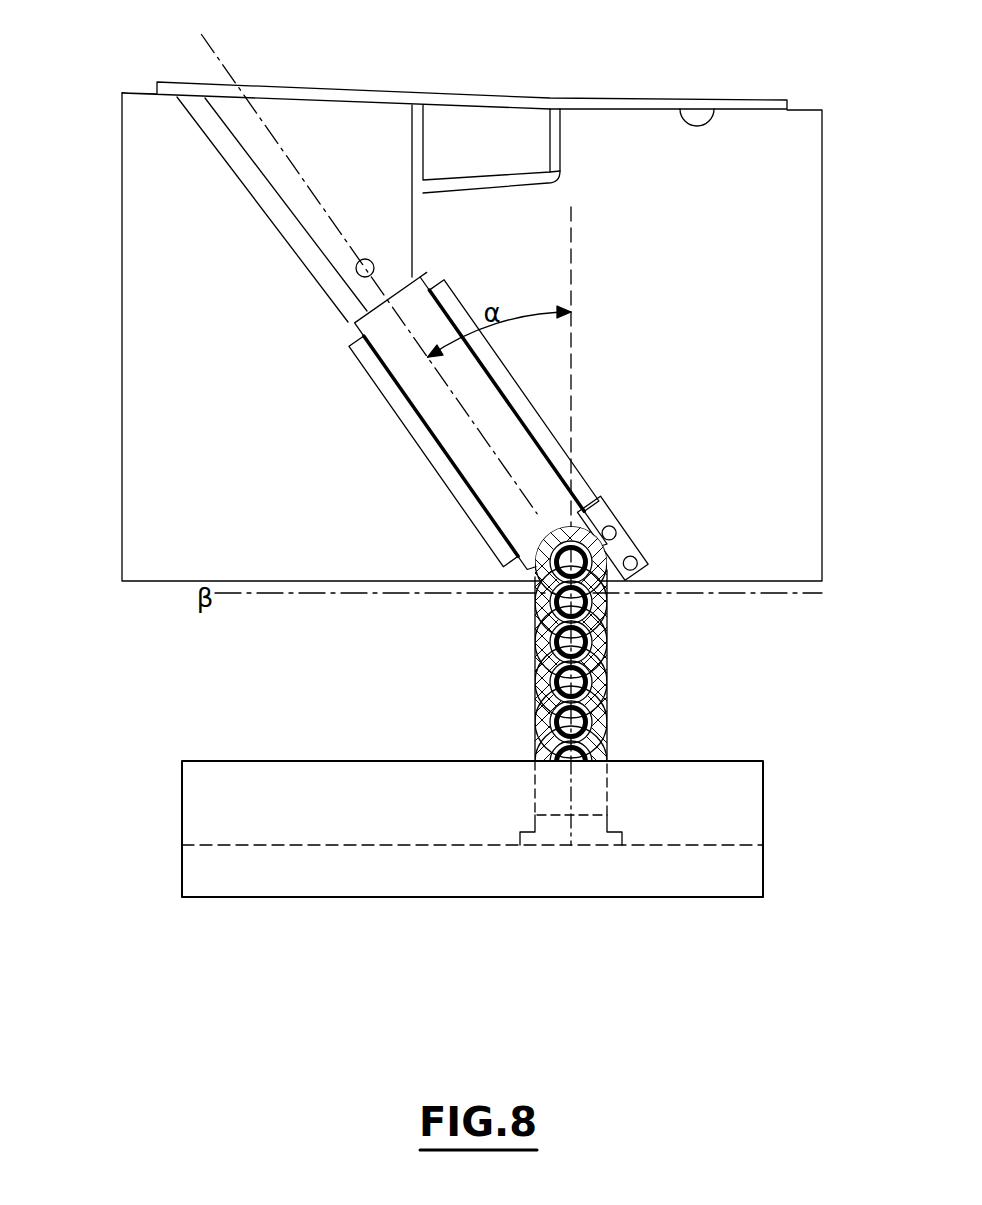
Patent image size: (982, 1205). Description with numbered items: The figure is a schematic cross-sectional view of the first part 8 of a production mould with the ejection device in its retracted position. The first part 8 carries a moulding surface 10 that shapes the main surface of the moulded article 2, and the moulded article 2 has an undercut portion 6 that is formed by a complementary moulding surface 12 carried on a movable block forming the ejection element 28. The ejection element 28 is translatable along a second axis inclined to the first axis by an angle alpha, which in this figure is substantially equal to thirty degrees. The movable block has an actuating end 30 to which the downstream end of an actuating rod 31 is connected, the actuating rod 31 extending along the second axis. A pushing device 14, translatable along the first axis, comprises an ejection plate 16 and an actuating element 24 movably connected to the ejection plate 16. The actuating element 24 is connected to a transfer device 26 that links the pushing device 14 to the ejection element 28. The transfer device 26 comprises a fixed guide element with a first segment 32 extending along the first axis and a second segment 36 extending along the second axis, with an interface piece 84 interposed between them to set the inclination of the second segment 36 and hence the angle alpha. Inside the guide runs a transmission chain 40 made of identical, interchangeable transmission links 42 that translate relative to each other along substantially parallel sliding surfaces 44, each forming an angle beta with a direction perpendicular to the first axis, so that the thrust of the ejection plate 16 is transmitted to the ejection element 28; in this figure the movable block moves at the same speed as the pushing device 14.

The moulded article 2 is at (345, 97).
The undercut portion 6 is at (553, 157).
The first part 8 is at (140, 490).
The moulding surface 10 is at (712, 120).
The complementary moulding surface 12 is at (548, 130).
The pushing device 14 is at (250, 733).
The ejection plate 16 is at (272, 868).
The actuating element 24 is at (563, 830).
The transfer device 26 is at (623, 640).
The ejection element 28 is at (288, 220).
The actuating end 30 is at (369, 292).
The actuating rod 31 is at (517, 457).
The first segment 32 is at (653, 680).
The second segment 36 is at (562, 477).
The transmission chain 40 is at (535, 692).
The transmission links 42 is at (607, 700).
The sliding surfaces 44 is at (535, 624).
The interface piece 84 is at (632, 545).